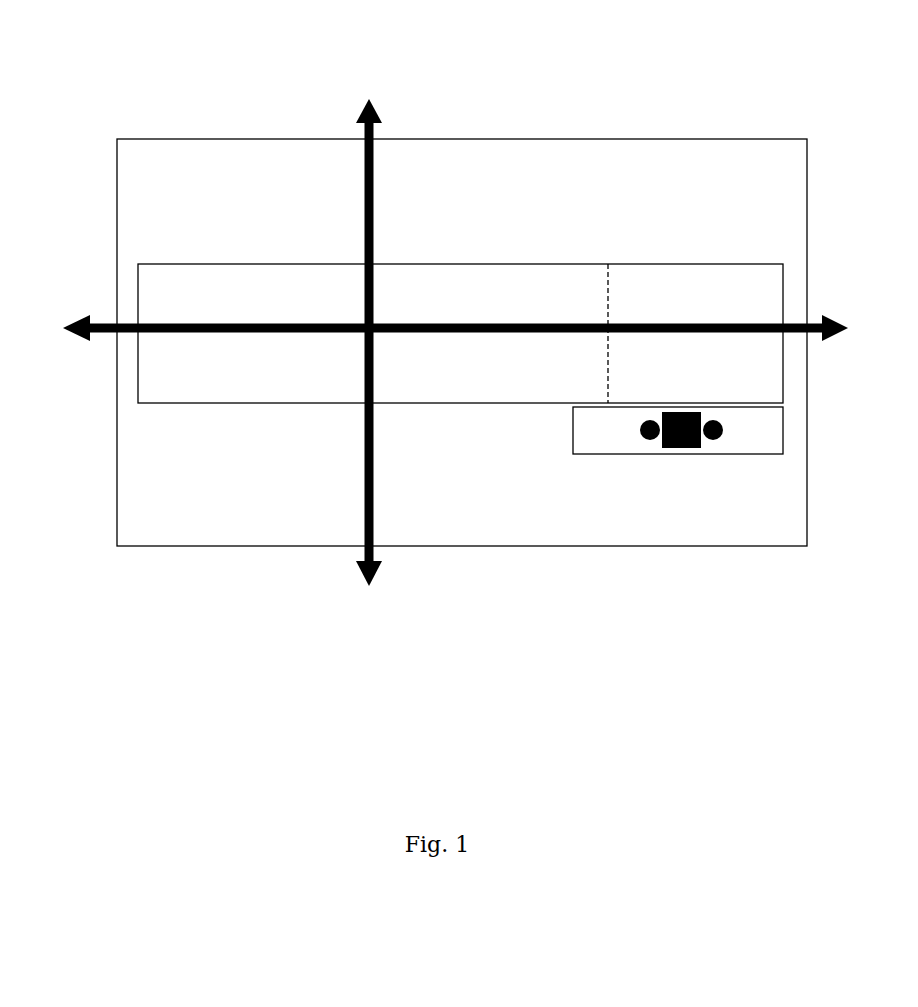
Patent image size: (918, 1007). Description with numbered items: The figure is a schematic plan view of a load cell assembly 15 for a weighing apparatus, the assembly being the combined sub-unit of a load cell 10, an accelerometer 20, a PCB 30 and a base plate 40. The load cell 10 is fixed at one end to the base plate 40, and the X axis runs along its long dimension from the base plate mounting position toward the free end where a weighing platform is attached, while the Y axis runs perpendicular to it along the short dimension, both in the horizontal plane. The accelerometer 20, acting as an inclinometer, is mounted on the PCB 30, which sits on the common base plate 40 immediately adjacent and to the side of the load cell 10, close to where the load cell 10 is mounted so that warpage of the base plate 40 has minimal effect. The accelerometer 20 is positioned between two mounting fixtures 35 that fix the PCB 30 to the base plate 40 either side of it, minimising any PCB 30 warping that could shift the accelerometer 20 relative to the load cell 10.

The load cell assembly 15 is at (243, 110).
The base plate 40 is at (462, 308).
The load cell 10 is at (460, 240).
The PCB 30 is at (678, 503).
The accelerometer 20 is at (688, 523).
The mounting fixtures 35 is at (705, 507).